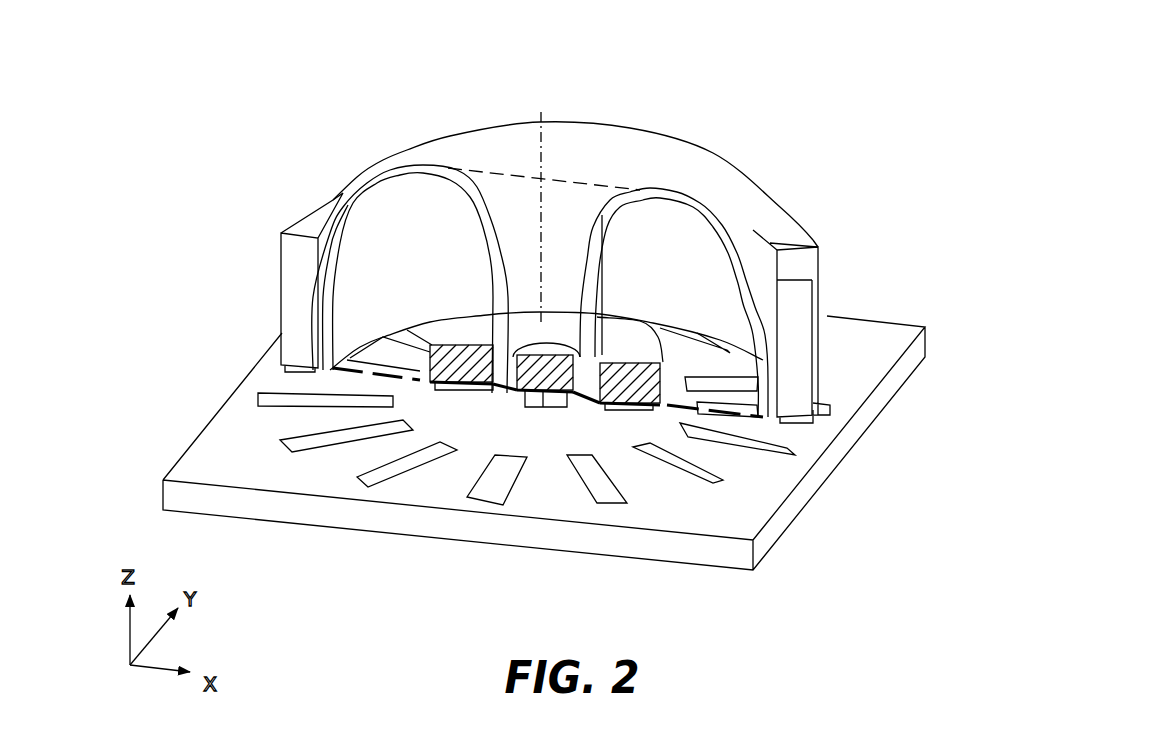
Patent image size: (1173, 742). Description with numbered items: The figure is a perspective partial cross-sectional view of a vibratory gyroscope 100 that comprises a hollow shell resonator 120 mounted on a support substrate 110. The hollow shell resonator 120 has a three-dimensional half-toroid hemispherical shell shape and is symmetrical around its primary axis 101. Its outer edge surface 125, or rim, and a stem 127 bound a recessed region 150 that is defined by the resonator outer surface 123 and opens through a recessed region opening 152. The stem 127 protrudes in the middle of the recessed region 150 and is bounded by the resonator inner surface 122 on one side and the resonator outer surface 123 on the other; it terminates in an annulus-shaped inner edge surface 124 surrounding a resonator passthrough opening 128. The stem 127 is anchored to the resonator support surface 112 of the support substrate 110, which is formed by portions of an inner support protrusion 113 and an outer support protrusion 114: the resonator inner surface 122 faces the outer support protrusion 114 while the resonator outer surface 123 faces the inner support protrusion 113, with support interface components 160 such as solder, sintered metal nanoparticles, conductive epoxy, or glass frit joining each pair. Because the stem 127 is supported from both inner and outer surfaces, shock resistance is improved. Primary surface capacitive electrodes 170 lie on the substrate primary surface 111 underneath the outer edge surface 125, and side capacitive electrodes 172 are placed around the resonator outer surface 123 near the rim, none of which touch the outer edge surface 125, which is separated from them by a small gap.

The vibratory gyroscope 100 is at (376, 138).
The primary axis 101 is at (540, 117).
The support substrate 110 is at (742, 561).
The substrate primary surface 111 is at (714, 524).
The resonator support surface 112 is at (584, 371).
The inner support protrusion 113 is at (587, 387).
The outer support protrusion 114 is at (639, 405).
The hollow shell resonator 120 is at (658, 138).
The resonator inner surface 122 is at (736, 274).
The resonator outer surface 123 is at (728, 215).
The inner edge surface 124 is at (578, 407).
The outer edge surface 125 is at (764, 430).
The stem 127 is at (500, 300).
The resonator passthrough opening 128 is at (513, 218).
The recessed region 150 is at (713, 298).
The recessed region opening 152 is at (672, 420).
The support interface component 160 is at (480, 386).
The primary surface capacitive electrode 170 is at (714, 478).
The side capacitive electrode 172 is at (790, 384).